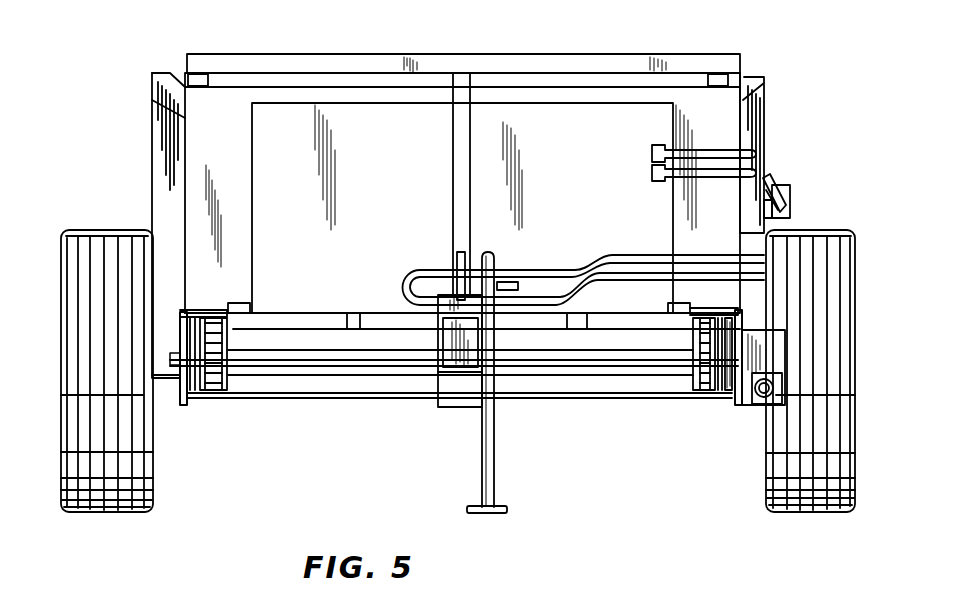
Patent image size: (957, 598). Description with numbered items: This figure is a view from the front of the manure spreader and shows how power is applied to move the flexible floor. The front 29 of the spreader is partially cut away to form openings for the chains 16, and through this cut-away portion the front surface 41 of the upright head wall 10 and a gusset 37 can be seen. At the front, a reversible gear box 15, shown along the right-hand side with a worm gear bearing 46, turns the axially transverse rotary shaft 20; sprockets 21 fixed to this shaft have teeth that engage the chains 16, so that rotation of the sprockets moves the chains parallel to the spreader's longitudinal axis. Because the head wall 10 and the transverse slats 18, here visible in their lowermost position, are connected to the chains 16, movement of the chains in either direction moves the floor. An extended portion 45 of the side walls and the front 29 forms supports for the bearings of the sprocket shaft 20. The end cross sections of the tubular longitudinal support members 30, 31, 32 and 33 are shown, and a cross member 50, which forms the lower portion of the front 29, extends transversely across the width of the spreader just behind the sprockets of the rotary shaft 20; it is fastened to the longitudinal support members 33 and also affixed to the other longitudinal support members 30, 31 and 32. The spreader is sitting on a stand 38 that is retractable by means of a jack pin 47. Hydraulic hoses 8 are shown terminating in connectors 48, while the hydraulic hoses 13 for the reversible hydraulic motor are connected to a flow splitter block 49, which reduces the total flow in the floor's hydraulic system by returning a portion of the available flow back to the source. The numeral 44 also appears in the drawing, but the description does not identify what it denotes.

The head wall 10 is at (496, 54).
The front surface of the head wall 41 is at (368, 143).
The front 29 is at (220, 188).
The connectors 48 is at (652, 172).
The hydraulic hoses 8 is at (775, 185).
The hydraulic hoses 13 is at (664, 258).
The flow splitter block 49 is at (445, 271).
The jack pin 47 is at (518, 282).
The gusset 37 is at (474, 253).
The stand 38 is at (493, 458).
The tubular longitudinal support member 31 is at (450, 347).
The tubular longitudinal support member 30 is at (347, 313).
The tubular longitudinal support member 32 is at (577, 313).
The cross member 50 is at (297, 352).
The rotary shaft 20 is at (397, 361).
The slats 18 is at (248, 301).
The chains 16 is at (252, 312).
The hub sprocket assembly 44 is at (231, 304).
The extended portion 45 is at (181, 292).
The tubular longitudinal support member 33 is at (201, 400).
The sprockets 21 is at (690, 397).
The gear box 15 is at (775, 357).
The worm gear bearing 46 is at (762, 406).